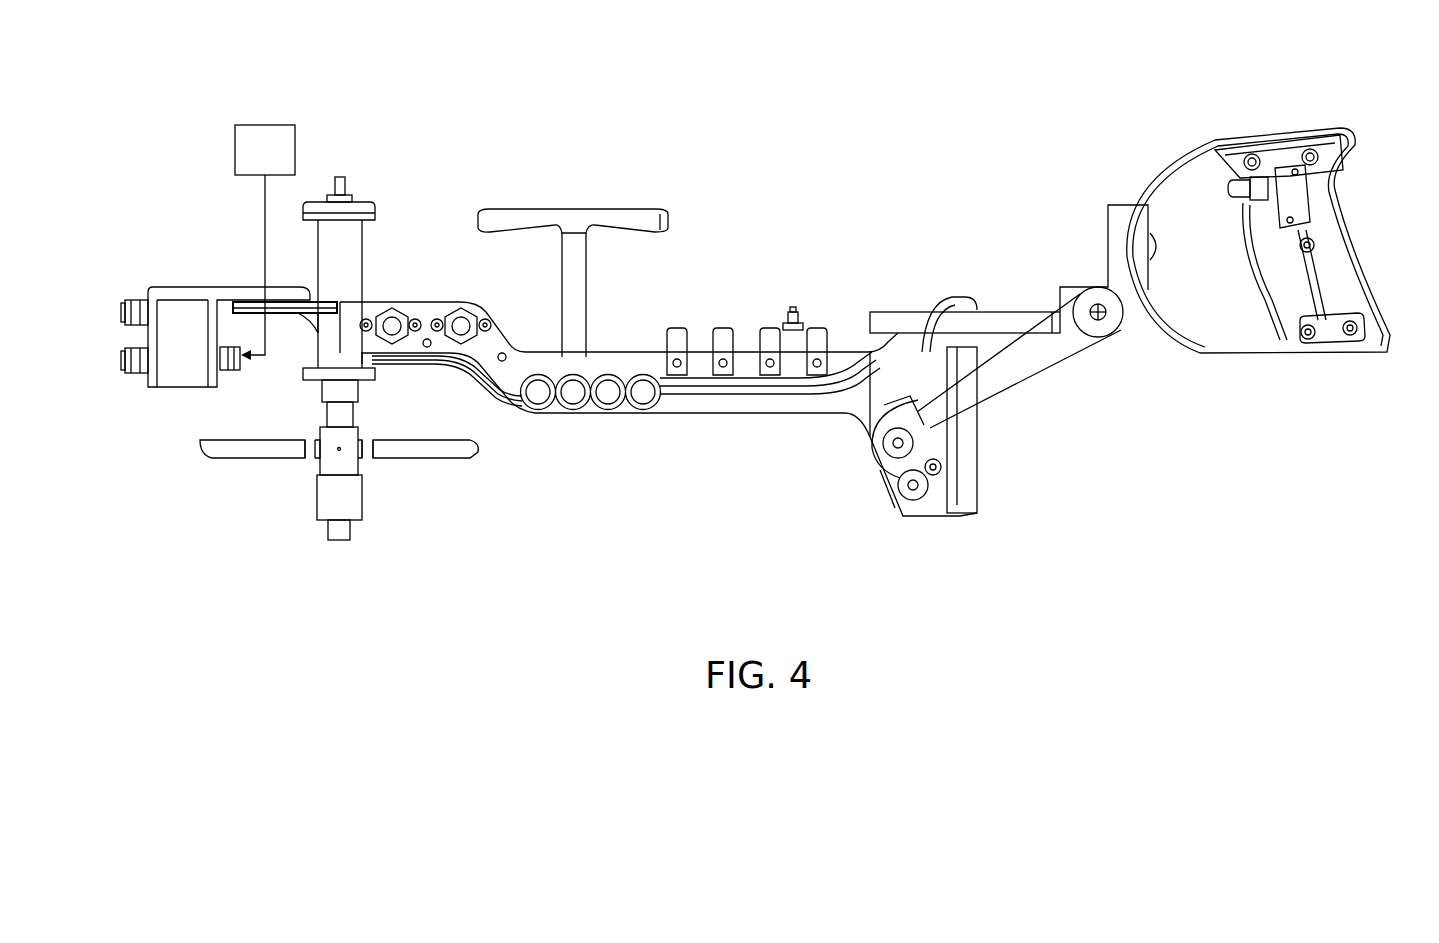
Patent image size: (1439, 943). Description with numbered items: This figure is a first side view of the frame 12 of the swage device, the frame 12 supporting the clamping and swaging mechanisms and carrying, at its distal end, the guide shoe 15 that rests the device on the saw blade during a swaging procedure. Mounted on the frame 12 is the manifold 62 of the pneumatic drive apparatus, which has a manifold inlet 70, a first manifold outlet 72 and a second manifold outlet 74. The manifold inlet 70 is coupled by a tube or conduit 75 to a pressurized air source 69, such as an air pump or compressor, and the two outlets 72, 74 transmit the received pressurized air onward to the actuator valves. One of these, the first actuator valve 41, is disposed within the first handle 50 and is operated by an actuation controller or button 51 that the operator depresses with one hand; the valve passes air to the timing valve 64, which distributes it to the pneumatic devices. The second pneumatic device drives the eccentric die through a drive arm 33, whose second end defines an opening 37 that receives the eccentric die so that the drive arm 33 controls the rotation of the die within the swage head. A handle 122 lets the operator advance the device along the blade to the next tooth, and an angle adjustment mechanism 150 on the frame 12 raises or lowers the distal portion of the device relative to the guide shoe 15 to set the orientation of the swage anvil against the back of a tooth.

The frame 12 is at (690, 415).
The guide shoe 15 is at (202, 453).
The drive arm 33 is at (1078, 368).
The opening 37 is at (913, 443).
The first actuator valve 41 is at (1295, 193).
The first handle 50 is at (1360, 257).
The actuation controller or button 51 is at (1233, 178).
The manifold 62 is at (150, 292).
The timing valve 64 is at (800, 303).
The pressurized air source 69 is at (278, 161).
The manifold inlet 70 is at (226, 370).
The first manifold outlet 72 is at (122, 368).
The second manifold outlet 74 is at (122, 312).
The tube or conduit 75 is at (263, 237).
The handle 122 is at (580, 205).
The angle adjustment mechanism 150 is at (365, 200).